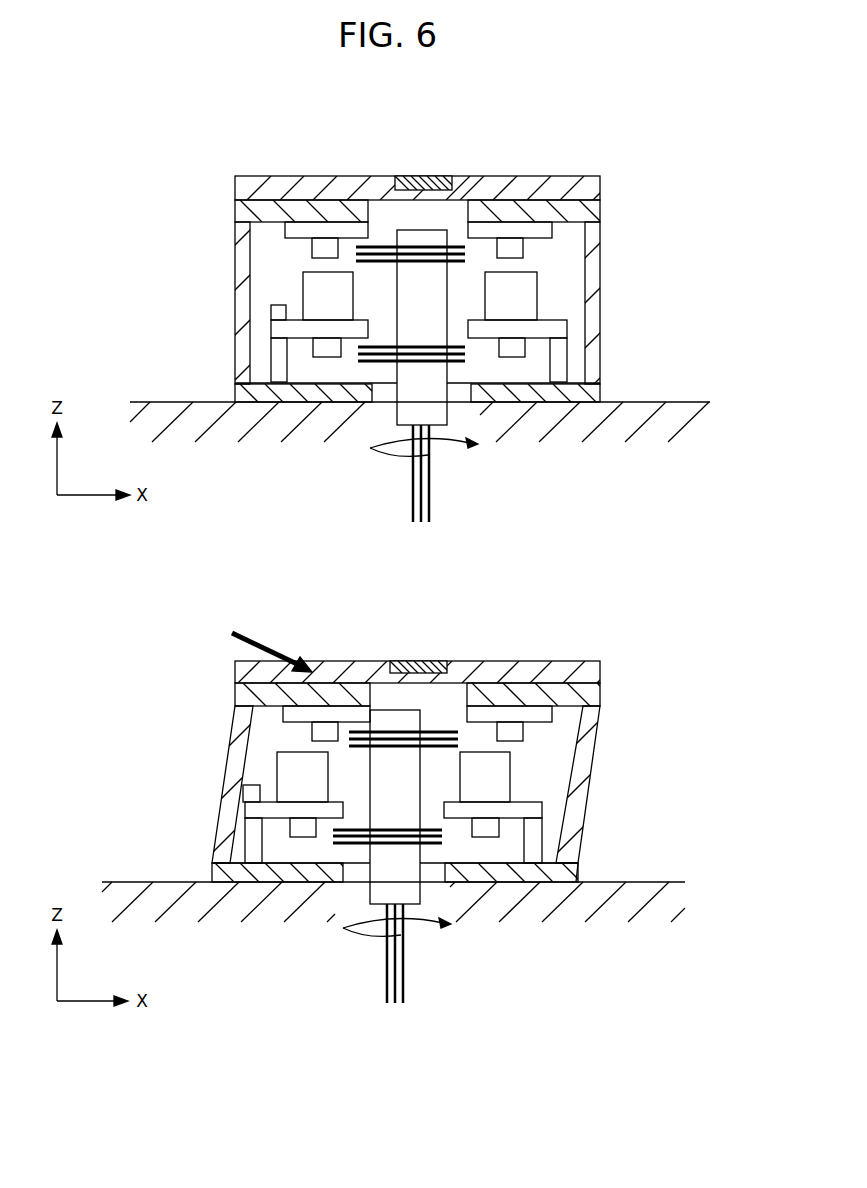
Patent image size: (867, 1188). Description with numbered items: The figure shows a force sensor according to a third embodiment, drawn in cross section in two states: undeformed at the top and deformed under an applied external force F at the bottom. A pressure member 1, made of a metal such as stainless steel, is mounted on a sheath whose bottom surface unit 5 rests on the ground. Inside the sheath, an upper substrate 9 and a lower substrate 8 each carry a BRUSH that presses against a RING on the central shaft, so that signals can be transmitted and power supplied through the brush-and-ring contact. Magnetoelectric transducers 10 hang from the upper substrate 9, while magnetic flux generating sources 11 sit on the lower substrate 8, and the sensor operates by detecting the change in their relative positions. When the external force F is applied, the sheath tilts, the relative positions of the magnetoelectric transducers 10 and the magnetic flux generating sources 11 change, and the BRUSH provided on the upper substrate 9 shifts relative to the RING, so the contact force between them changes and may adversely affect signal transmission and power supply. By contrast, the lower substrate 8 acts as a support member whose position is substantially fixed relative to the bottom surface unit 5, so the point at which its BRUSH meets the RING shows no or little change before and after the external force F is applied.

The pressure member 1 is at (420, 188).
The bottom surface unit 5 is at (250, 393).
The lower substrate 8 is at (282, 330).
The upper substrate 9 is at (308, 228).
The magnetoelectric transducers 10 is at (315, 253).
The magnetic flux generating sources 11 is at (313, 292).
The rings RING is at (412, 330).
The brushes BRUSH is at (452, 345).
The external force F is at (265, 639).